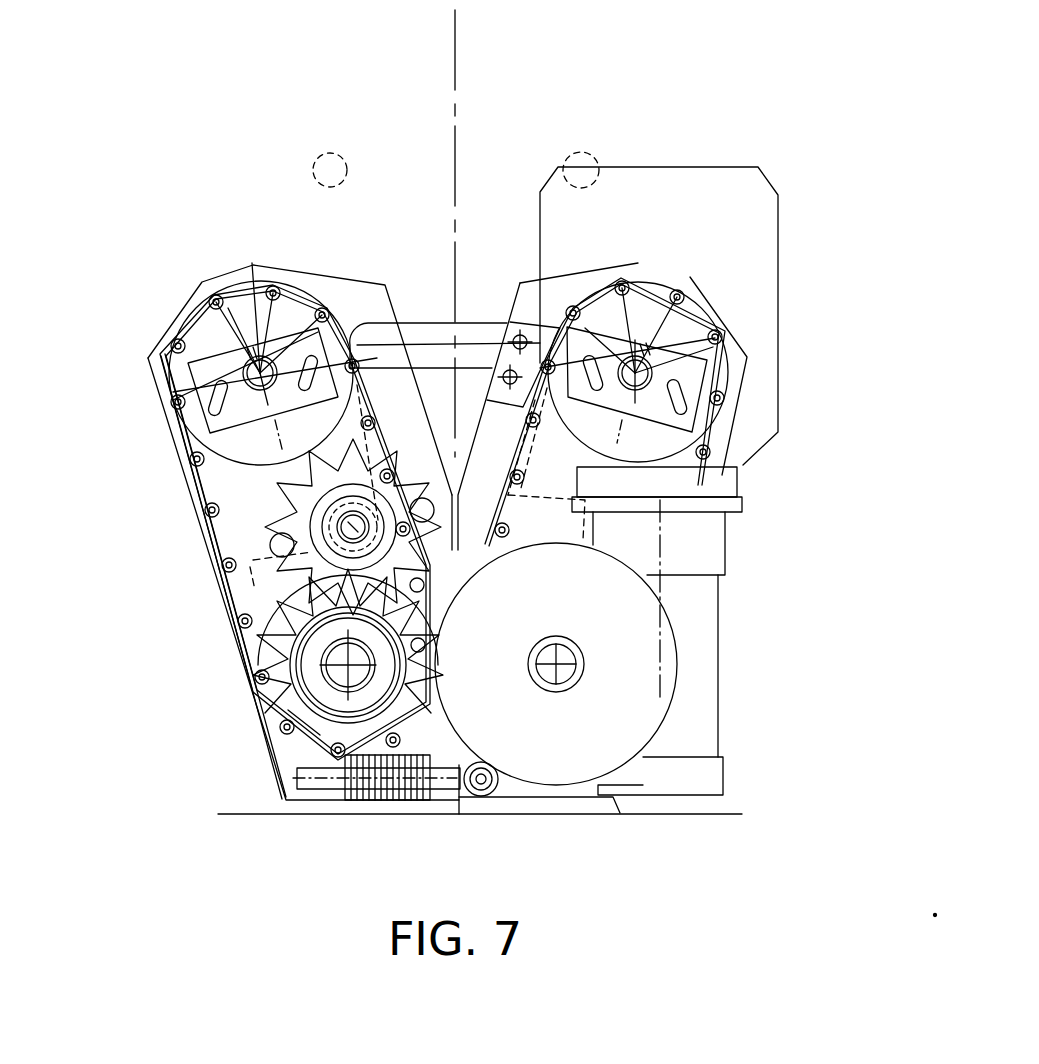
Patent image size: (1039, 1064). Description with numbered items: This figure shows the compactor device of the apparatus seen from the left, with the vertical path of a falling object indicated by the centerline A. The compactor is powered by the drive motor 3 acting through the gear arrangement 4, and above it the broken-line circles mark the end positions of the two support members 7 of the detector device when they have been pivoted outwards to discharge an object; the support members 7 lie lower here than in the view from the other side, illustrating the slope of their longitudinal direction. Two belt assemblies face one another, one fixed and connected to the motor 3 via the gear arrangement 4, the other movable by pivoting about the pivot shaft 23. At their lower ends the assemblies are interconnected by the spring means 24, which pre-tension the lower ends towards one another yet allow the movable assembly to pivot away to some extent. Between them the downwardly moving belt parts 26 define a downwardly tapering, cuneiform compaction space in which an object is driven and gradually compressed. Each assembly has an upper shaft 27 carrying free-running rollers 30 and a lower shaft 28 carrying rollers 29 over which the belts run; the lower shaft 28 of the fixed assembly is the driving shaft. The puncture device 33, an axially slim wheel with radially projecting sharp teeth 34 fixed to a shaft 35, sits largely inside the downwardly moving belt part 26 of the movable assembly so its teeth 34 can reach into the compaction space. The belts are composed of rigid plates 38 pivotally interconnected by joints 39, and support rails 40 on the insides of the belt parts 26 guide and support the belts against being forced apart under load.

The axis A is at (455, 33).
The drive motor 3 is at (725, 190).
The gear arrangement 4 is at (703, 675).
The support members 7 is at (313, 162).
The pivot shaft 23 is at (368, 337).
The spring means 24 is at (388, 795).
The belt parts 26 is at (495, 448).
The upper shaft 27 is at (202, 338).
The lower shaft 28 is at (333, 687).
The rollers 29 is at (323, 722).
The free-running rollers 30 is at (713, 377).
The puncture device 33 is at (190, 548).
The teeth 34 is at (262, 498).
The shaft 35 is at (300, 575).
The plates 38 is at (240, 277).
The joints 39 is at (272, 310).
The support rails 40 is at (530, 455).